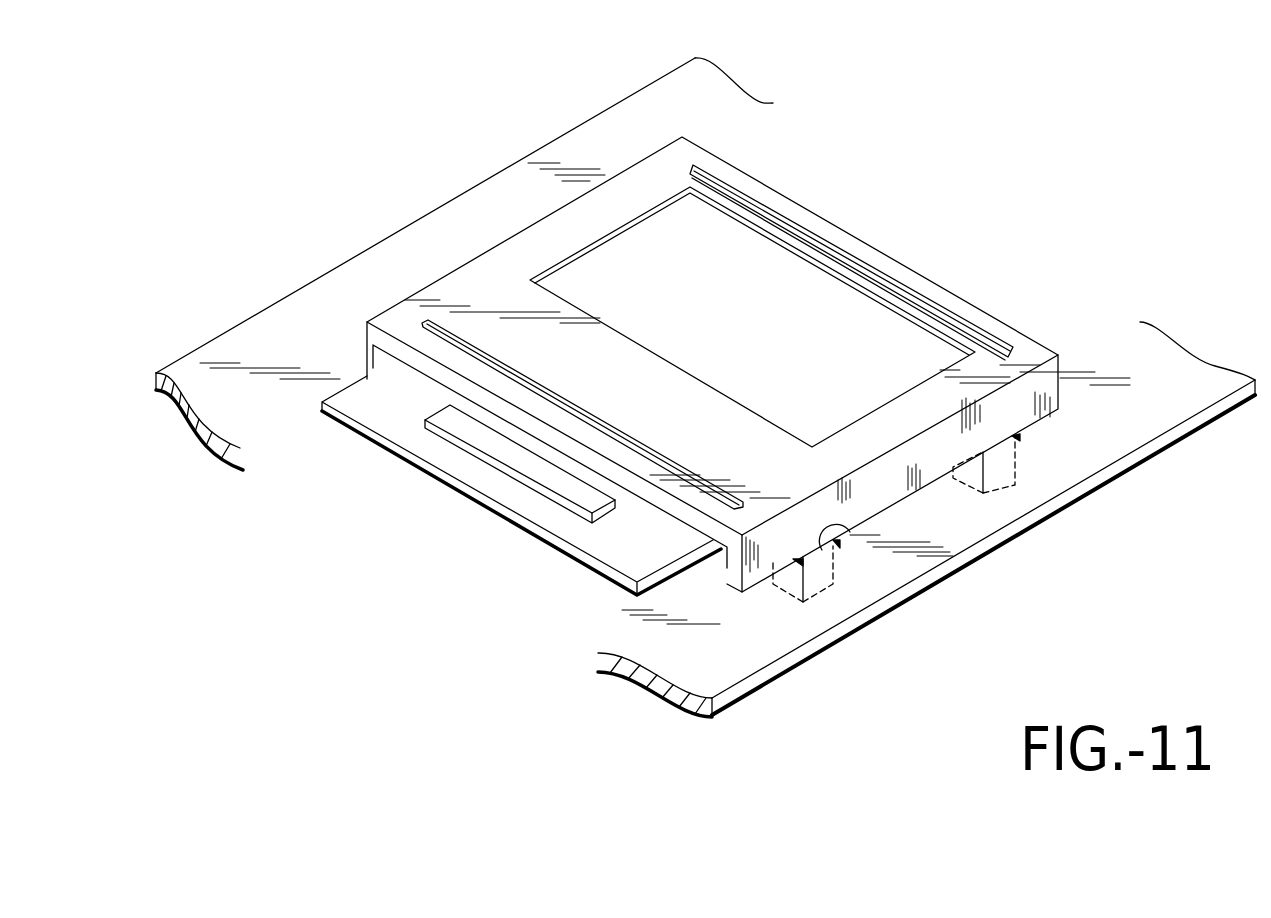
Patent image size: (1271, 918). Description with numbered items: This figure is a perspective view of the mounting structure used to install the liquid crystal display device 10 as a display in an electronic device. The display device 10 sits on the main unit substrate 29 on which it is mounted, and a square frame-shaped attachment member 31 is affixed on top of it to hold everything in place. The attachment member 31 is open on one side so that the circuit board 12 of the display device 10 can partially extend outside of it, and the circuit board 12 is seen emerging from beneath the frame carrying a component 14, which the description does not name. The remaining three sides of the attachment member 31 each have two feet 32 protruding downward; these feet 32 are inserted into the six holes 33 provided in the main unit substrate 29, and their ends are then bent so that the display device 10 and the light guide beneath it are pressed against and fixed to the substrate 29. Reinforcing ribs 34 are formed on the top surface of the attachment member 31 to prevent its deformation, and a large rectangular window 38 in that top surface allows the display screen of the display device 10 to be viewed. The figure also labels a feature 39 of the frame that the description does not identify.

The liquid crystal display device 10 is at (645, 245).
The circuit board 12 is at (550, 522).
The integrated circuit chip 14 is at (518, 463).
The main unit substrate 29 is at (1120, 448).
The attachment member 31 is at (457, 280).
The feet 32 is at (838, 582).
The holes 33 is at (852, 531).
The reinforcing ribs 34 is at (933, 303).
The rectangular window 38 is at (867, 290).
The recess opening 39 is at (787, 265).